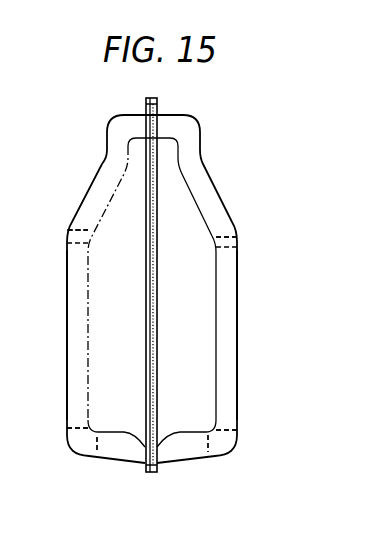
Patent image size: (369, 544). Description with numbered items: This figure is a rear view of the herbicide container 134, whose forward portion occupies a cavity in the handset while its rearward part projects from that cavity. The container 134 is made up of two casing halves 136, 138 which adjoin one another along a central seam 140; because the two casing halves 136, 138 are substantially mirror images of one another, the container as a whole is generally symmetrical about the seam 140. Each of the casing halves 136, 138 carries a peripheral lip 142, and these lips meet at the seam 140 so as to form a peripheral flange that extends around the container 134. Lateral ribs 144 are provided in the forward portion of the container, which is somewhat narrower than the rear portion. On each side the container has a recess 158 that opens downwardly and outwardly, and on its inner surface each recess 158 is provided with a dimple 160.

The container 134 is at (228, 202).
The casing half 136 is at (78, 338).
The casing half 138 is at (210, 341).
The seam 140 is at (153, 99).
The peripheral lip 142 is at (150, 320).
The lateral rib 144 is at (70, 231).
The recess 158 is at (74, 440).
The dimple 160 is at (91, 430).